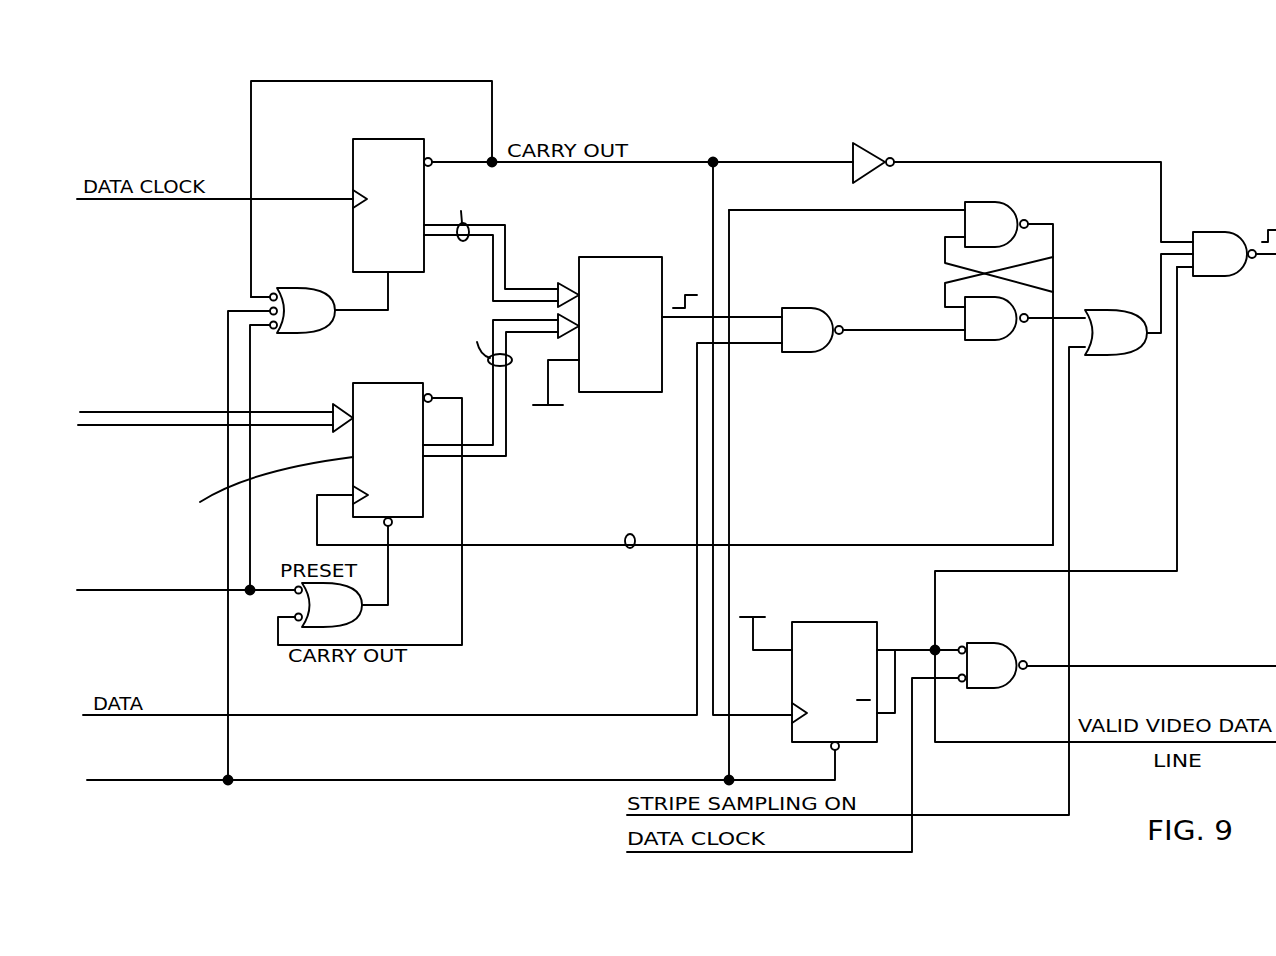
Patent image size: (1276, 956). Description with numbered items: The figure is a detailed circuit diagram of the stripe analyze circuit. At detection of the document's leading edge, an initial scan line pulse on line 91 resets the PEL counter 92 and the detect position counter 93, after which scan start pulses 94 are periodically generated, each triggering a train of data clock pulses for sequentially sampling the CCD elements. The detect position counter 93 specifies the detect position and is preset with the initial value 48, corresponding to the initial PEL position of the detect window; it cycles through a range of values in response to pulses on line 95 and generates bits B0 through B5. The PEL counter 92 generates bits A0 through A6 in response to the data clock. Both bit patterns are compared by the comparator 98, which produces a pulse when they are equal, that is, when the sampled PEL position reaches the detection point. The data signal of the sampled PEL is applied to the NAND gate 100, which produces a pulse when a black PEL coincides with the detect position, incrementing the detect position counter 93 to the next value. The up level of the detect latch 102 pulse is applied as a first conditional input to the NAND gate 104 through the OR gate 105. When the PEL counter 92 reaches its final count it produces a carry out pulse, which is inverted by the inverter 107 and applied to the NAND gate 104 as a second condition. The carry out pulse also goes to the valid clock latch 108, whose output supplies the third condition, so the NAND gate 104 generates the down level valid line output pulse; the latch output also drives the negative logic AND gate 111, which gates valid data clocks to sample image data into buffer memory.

The initial value 48 is at (215, 410).
The initial scan line pulse line 91 is at (169, 591).
The PEL counter 92 is at (356, 176).
The detect position counter 93 is at (355, 398).
The scan start pulse 94 is at (213, 779).
The line 95 is at (631, 549).
The comparator 98 is at (614, 261).
The NAND gate 100 is at (795, 352).
The detect latch 102 is at (948, 273).
The NAND gate 104 is at (1212, 233).
The OR gate 105 is at (1100, 312).
The inverter 107 is at (866, 146).
The valid clock latch 108 is at (877, 593).
The negative logic AND gate 111 is at (985, 644).